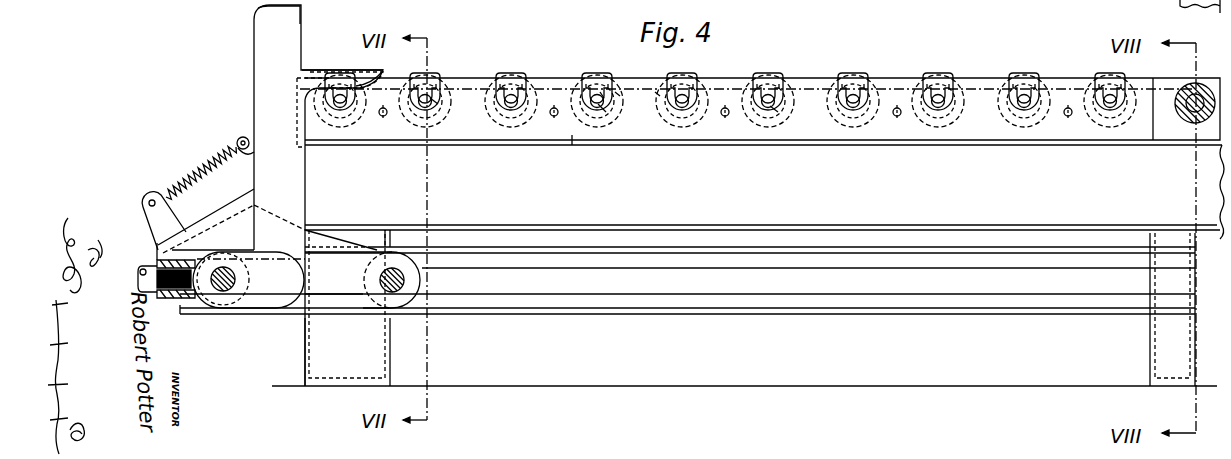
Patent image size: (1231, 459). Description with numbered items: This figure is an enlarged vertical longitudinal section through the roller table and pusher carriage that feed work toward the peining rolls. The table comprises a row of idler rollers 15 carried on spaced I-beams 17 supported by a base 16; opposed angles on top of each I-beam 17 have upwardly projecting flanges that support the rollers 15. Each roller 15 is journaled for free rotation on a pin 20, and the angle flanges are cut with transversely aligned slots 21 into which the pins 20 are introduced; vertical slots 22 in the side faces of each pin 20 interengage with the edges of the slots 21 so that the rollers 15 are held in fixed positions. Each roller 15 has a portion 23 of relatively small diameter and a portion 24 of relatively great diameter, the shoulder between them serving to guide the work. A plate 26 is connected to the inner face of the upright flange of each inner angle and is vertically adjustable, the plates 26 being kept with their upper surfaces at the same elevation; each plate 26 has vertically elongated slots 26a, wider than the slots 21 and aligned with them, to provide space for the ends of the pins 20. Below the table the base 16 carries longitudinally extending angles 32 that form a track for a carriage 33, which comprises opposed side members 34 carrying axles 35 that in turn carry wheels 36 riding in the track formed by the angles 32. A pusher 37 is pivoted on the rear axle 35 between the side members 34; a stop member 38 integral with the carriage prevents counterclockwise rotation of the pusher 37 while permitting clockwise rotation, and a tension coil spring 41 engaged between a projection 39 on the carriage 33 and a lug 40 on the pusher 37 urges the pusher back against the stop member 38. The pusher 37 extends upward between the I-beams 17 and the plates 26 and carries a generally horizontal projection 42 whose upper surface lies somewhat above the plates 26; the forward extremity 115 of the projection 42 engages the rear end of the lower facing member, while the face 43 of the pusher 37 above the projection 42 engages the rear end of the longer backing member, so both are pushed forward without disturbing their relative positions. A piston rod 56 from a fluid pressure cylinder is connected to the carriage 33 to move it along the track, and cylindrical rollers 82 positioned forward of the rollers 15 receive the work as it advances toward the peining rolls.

The idler rollers 15 is at (508, 80).
The base 16 is at (750, 308).
The I-beams 17 is at (762, 158).
The pin 20 is at (432, 105).
The slots 21 is at (598, 92).
The vertical slots 22 is at (604, 104).
The portion of relatively small diameter 23 is at (776, 110).
The portion of relatively great diameter 24 is at (772, 128).
The plate 26 is at (572, 135).
The vertically elongated slots 26a is at (657, 92).
The longitudinally extending angles 32 is at (711, 258).
The carriage 33 is at (333, 240).
The side members 34 is at (280, 273).
The axles 35 is at (215, 290).
The wheels 36 is at (248, 280).
The pusher 37 is at (292, 191).
The stop member 38 is at (232, 210).
The projection 39 is at (147, 202).
The lug 40 is at (243, 138).
The tension coil spring 41 is at (204, 160).
The projection 42 is at (327, 72).
The face 43 is at (301, 28).
The piston rod 56 is at (150, 270).
The cylindrical rollers 82 is at (1188, 88).
The forward extremity 115 is at (378, 80).